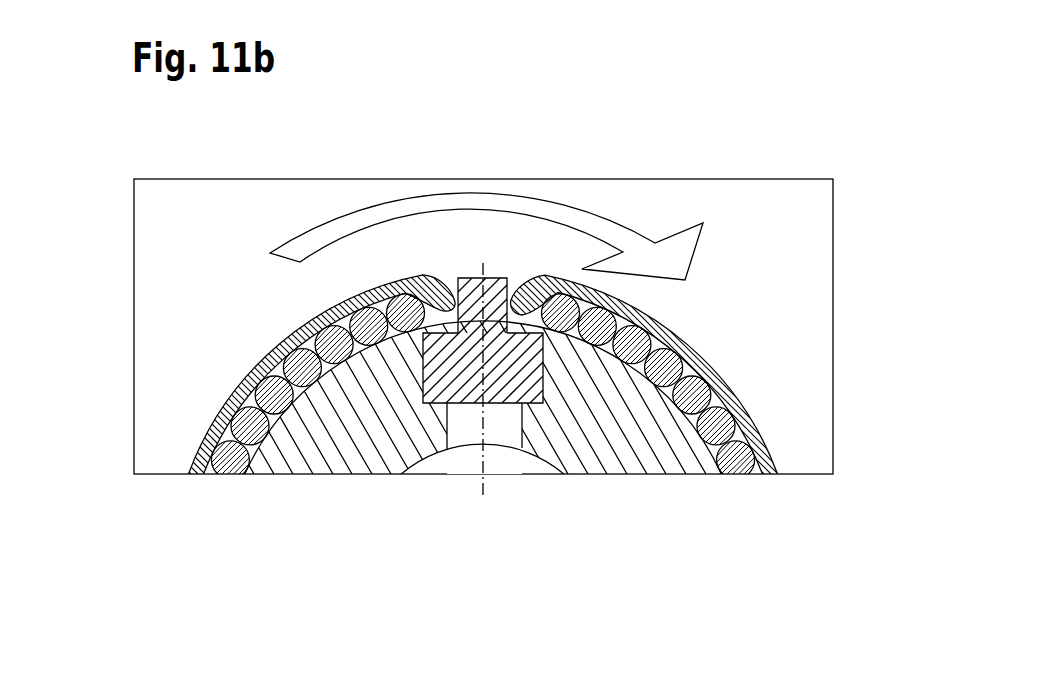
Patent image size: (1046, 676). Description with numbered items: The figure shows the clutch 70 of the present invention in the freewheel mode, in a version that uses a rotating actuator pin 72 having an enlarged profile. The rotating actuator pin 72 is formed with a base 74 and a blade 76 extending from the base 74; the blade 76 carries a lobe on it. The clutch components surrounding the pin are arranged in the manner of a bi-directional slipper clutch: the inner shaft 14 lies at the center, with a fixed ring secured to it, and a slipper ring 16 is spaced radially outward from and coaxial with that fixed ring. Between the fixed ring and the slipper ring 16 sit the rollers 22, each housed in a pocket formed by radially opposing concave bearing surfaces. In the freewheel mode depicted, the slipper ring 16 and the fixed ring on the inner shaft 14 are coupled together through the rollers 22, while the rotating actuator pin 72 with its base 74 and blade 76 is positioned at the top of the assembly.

The clutch 70 is at (118, 349).
The rotating actuator pin 72 is at (441, 260).
The base 74 is at (543, 389).
The blade 76 is at (472, 278).
The slipper ring 16 is at (752, 428).
The rollers 22 is at (733, 470).
The inner shaft 14 is at (658, 460).